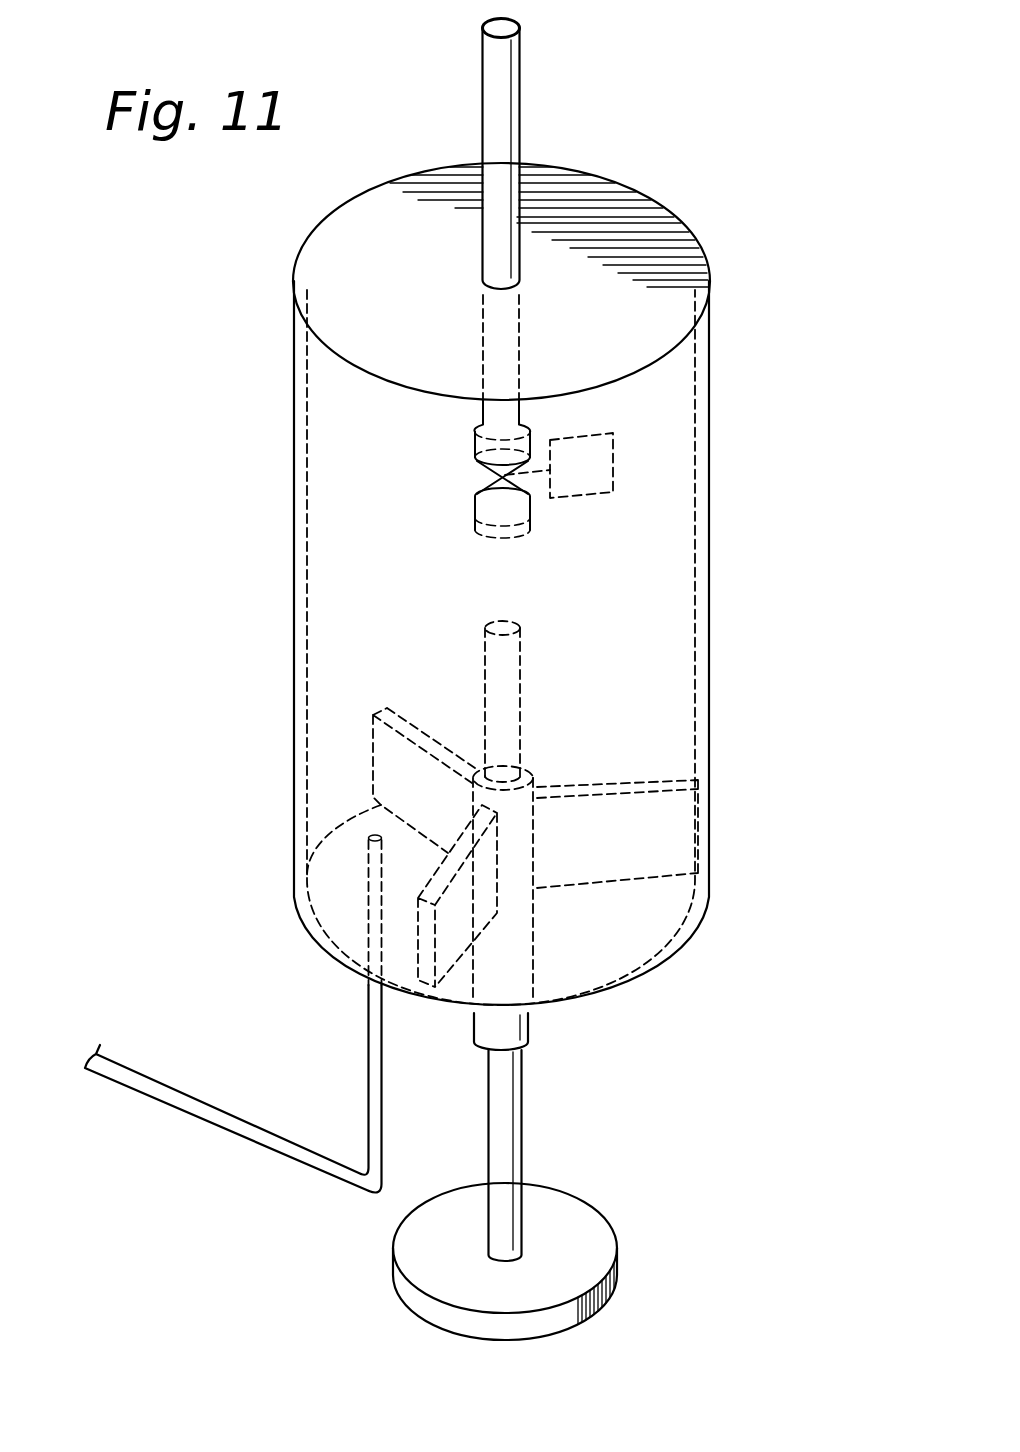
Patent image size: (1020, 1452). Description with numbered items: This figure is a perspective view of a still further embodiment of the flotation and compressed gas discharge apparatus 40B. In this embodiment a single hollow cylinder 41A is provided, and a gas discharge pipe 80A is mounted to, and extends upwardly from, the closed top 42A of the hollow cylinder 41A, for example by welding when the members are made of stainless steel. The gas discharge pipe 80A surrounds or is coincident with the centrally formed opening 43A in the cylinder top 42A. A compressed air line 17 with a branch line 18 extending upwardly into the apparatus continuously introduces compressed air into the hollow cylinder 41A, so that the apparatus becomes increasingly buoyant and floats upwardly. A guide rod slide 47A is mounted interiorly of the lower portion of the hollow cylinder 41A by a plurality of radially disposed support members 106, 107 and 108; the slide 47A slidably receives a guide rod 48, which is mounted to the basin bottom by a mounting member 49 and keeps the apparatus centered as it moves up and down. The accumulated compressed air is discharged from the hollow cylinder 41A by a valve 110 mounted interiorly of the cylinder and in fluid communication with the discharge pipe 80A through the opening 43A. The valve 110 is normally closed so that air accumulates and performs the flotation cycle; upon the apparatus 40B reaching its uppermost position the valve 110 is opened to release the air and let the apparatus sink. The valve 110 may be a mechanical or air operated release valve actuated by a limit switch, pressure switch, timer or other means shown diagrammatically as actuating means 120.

The flotation and compressed gas discharge apparatus 40B is at (778, 157).
The hollow cylinder 41A is at (294, 505).
The closed top 42A is at (316, 268).
The centrally formed opening 43A is at (493, 280).
The gas discharge pipe 80A is at (513, 91).
The valve 110 is at (490, 492).
The actuating means 120 is at (590, 498).
The support member 107 is at (413, 757).
The support member 106 is at (607, 808).
The support member 108 is at (450, 946).
The compressed air line 17 is at (170, 1084).
The branch line 18 is at (368, 1040).
The guide rod slide 47A is at (535, 1027).
The guide rod 48 is at (526, 1106).
The mounting member 49 is at (620, 1254).